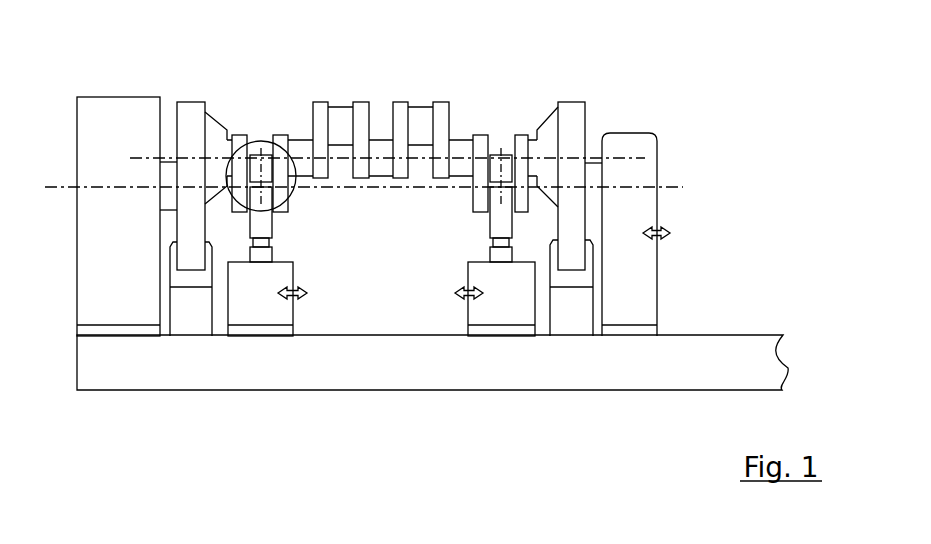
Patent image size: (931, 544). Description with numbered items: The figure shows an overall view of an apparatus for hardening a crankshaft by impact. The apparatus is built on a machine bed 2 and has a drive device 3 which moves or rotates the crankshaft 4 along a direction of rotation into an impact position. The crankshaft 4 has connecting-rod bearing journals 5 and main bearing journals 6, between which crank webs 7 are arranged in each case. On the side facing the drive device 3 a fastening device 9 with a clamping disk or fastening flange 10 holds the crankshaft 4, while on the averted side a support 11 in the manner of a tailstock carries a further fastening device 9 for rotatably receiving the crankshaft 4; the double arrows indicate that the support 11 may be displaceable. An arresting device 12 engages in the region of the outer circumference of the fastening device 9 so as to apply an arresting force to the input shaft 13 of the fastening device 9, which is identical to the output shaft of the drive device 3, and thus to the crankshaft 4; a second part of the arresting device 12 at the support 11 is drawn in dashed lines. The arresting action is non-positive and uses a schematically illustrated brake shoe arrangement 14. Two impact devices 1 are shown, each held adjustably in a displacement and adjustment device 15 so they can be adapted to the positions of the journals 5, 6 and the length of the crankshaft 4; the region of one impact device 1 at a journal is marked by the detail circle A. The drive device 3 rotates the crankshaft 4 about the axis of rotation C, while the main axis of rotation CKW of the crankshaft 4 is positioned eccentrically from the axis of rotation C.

The impact device 1 is at (291, 229).
The machine bed 2 is at (723, 348).
The drive device 3 is at (108, 277).
The crankshaft 4 is at (382, 103).
The connecting-rod bearing journal 5 is at (338, 110).
The main bearing journal 6 is at (380, 143).
The crank web 7 is at (357, 110).
The fastening device 9 is at (208, 101).
The fastening flange 10 is at (190, 108).
The support 11 is at (647, 170).
The arresting device 12 is at (185, 315).
The input shaft 13 is at (168, 200).
The brake shoe arrangement 14 is at (199, 283).
The displacement and adjustment device 15 is at (285, 313).
The detail circle A is at (260, 140).
The axis of rotation C is at (67, 187).
The main axis of rotation of the crankshaft CKW is at (623, 158).